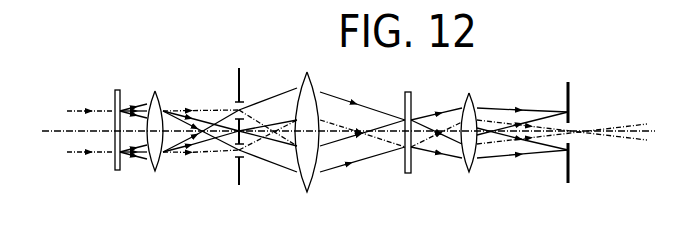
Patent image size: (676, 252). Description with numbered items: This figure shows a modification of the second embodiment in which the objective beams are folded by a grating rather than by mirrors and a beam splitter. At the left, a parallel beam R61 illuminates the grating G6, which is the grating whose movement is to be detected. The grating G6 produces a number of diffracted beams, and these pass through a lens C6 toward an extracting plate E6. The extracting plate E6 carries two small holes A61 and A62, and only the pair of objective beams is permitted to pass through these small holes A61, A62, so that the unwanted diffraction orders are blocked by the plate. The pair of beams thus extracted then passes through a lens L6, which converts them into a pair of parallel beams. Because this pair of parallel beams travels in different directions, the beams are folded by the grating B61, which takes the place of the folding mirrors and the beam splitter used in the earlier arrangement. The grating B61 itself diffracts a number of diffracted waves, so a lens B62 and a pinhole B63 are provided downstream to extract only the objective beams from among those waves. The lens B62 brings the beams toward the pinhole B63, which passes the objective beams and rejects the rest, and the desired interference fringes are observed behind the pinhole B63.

The parallel beam R61 is at (81, 154).
The grating G6 is at (118, 172).
The lens C6 is at (155, 172).
The extracting plate E6 is at (240, 131).
The small hole A61 is at (243, 100).
The small hole A62 is at (247, 159).
The lens L6 is at (311, 192).
The grating B61 is at (407, 174).
The lens B62 is at (469, 173).
The pinhole B63 is at (567, 170).